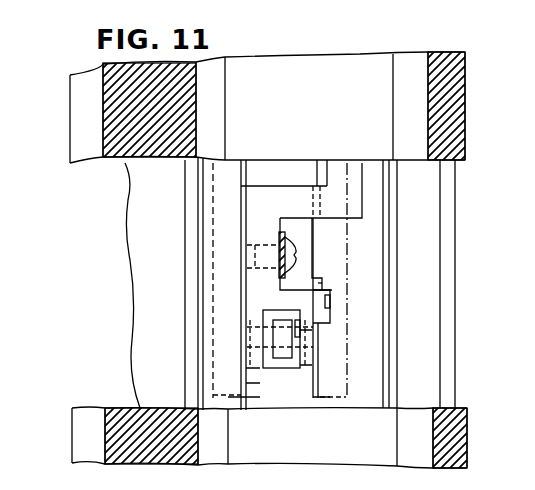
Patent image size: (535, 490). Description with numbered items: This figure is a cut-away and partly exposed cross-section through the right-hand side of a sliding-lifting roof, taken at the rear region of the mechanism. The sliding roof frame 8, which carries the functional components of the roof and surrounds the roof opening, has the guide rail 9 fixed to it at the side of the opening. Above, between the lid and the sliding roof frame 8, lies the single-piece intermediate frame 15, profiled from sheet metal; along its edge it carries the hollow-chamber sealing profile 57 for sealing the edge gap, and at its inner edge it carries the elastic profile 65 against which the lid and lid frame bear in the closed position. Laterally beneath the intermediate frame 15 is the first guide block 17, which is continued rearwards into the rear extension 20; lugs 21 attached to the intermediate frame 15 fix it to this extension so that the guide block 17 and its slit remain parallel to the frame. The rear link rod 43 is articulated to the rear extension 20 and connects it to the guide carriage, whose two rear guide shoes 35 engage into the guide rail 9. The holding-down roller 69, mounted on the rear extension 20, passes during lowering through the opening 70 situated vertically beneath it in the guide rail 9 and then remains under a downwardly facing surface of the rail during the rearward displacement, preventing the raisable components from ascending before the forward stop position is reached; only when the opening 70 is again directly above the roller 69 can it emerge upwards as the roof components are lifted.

The intermediate frame 15 is at (326, 124).
The sealing profile 57 is at (130, 109).
The elastic profile 65 is at (455, 111).
The sliding roof frame 8 is at (135, 219).
The guide rail 9 is at (218, 195).
The first guide block 17 is at (357, 190).
The rear extension 20 is at (262, 292).
The lugs 21 is at (282, 240).
The opening 70 is at (320, 282).
The holding-down roller 69 is at (318, 292).
The rear link rod 43 is at (283, 358).
The guide shoes 35 is at (236, 398).